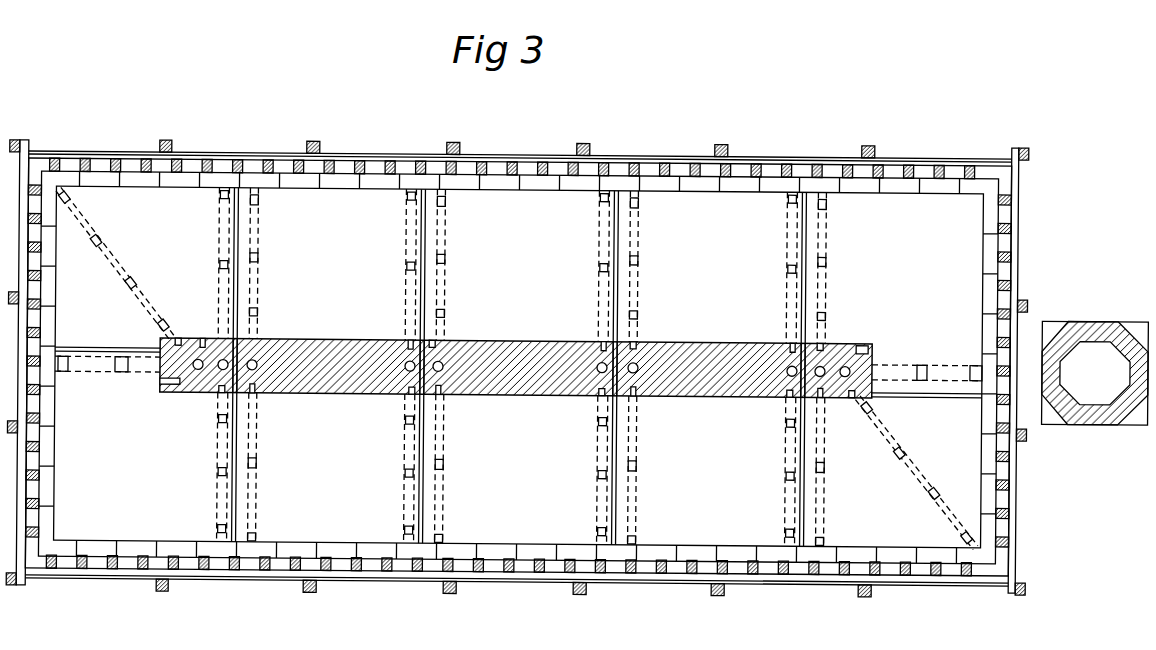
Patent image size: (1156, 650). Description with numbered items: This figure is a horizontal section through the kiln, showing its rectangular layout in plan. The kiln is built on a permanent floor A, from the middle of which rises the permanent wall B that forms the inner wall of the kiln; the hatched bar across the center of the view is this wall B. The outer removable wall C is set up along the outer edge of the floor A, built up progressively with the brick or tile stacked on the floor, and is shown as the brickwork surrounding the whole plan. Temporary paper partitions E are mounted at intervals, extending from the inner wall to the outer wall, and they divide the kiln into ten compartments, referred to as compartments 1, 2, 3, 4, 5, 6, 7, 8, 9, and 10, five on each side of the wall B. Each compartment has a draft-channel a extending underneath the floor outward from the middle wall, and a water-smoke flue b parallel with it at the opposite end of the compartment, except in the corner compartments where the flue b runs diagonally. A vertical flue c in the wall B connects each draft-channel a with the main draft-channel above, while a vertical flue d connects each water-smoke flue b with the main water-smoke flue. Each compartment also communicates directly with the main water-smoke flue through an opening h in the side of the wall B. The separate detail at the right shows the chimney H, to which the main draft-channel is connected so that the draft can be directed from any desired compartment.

The compartment 1 is at (337, 248).
The compartment 2 is at (521, 247).
The compartment 3 is at (713, 247).
The compartment 4 is at (901, 263).
The compartment 5 is at (889, 491).
The compartment 6 is at (709, 480).
The compartment 7 is at (514, 479).
The compartment 8 is at (324, 472).
The compartment 9 is at (129, 454).
The compartment 10 is at (148, 247).
The floor A is at (345, 198).
The wall B is at (698, 342).
The outer removable wall C is at (521, 183).
The temporary paper partitions E is at (934, 396).
The chimney H is at (1095, 358).
The draft-channel a is at (825, 476).
The water-smoke flue b is at (787, 482).
The vertical flue c is at (876, 364).
The vertical flue d is at (855, 395).
The opening h is at (821, 395).